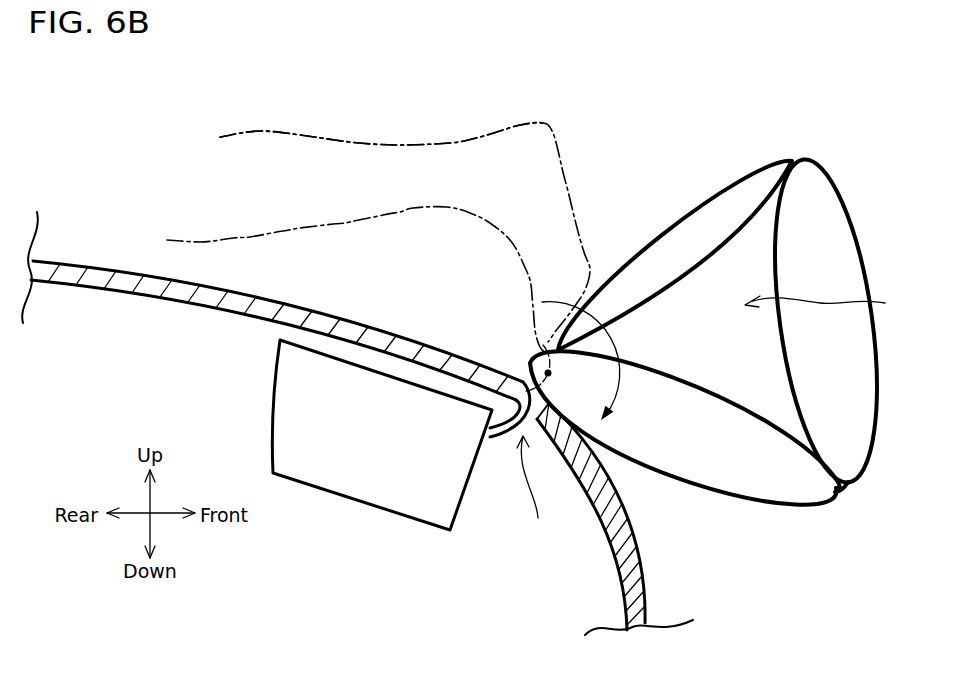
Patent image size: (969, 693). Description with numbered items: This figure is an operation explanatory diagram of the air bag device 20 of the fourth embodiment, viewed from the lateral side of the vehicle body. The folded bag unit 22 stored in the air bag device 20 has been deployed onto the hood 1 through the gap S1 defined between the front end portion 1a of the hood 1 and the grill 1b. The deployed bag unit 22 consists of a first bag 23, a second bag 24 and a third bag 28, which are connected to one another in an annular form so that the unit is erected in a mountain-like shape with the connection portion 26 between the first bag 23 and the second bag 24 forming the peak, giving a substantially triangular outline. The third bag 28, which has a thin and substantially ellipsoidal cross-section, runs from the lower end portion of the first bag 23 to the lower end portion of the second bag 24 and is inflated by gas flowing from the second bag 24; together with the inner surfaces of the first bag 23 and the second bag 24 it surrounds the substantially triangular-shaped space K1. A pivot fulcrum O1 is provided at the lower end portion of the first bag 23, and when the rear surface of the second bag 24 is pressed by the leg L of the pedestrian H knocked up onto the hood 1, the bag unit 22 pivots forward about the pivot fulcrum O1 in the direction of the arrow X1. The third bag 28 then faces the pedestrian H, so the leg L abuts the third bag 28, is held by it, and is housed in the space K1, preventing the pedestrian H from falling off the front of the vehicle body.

The hood 1 is at (380, 423).
The front end portion of the hood 1a is at (512, 394).
The grill 1b is at (645, 582).
The air bag device 20 is at (355, 498).
The bag unit 22 is at (712, 318).
The first bag 23 is at (683, 477).
The second bag 24 is at (852, 223).
The connection portion 26 is at (855, 510).
The third bag 28 is at (645, 250).
The pivot fulcrum O1 is at (546, 368).
The arrow indicating pivot direction X1 is at (612, 340).
The substantially triangular-shaped space K1 is at (831, 303).
The gap S1 is at (533, 492).
The leg L is at (387, 143).
The pedestrian H is at (387, 143).